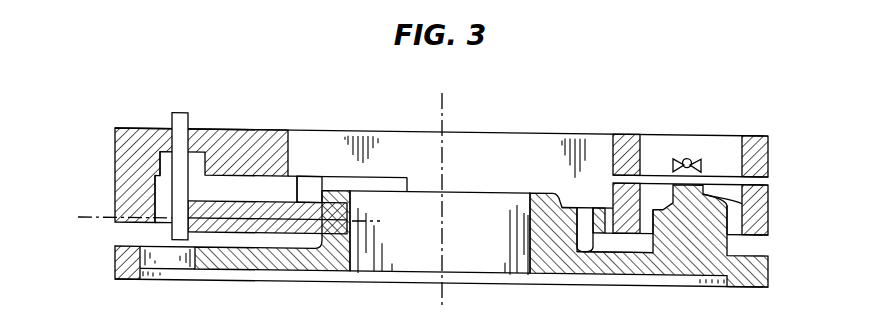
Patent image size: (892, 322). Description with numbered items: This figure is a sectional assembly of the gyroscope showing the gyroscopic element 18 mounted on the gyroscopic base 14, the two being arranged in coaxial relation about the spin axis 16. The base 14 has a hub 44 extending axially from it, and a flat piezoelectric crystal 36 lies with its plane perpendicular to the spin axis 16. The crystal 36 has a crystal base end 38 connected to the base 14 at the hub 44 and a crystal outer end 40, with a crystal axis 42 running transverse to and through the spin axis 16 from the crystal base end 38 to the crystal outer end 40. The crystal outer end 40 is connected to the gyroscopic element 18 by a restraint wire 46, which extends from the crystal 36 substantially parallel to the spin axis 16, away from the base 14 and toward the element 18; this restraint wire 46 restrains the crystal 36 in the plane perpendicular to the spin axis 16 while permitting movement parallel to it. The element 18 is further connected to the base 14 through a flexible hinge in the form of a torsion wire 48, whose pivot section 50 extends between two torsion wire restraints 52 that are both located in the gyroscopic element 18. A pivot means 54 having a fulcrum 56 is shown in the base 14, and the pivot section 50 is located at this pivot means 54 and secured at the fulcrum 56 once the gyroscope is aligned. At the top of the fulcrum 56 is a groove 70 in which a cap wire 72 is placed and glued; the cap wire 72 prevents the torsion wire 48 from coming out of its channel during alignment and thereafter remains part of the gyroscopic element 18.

The gyroscopic base 14 is at (120, 264).
The spin axis 16 is at (442, 104).
The gyroscopic element 18 is at (115, 163).
The piezoelectric crystal 36 is at (305, 193).
The crystal base end 38 is at (352, 212).
The crystal outer end 40 is at (172, 228).
The crystal axis 42 is at (88, 216).
The hub 44 is at (538, 195).
The restraint wire 46 is at (180, 113).
The torsion wire 48 is at (772, 182).
The pivot section 50 is at (656, 173).
The torsion wire restraints 52 is at (615, 137).
The pivot means 54 is at (760, 233).
The fulcrum 56 is at (724, 178).
The groove 70 is at (714, 174).
The cap wire 72 is at (687, 150).